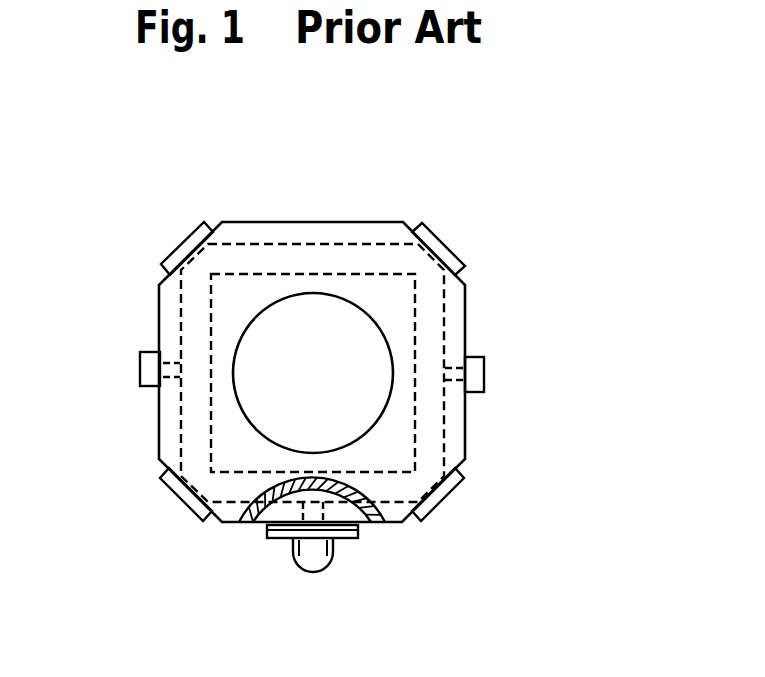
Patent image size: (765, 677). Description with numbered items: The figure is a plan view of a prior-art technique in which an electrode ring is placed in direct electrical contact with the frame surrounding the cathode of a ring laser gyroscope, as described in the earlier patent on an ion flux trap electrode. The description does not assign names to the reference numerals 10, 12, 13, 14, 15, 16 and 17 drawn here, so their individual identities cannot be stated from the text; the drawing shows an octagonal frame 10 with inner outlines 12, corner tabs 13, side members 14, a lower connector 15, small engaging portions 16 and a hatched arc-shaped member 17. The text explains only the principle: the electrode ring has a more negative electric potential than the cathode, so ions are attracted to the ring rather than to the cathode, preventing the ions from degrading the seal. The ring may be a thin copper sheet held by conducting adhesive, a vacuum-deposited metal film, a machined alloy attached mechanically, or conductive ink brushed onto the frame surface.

The optical pickup base (prior art) 10 is at (298, 228).
The lens / optical element region 12 is at (344, 258).
The corner mounting tabs 13 is at (172, 253).
The side mounting members 14 is at (140, 364).
The connector / hook 15 is at (332, 563).
The engaging portions 16 is at (157, 352).
The hatched arc-shaped member 17 is at (380, 527).